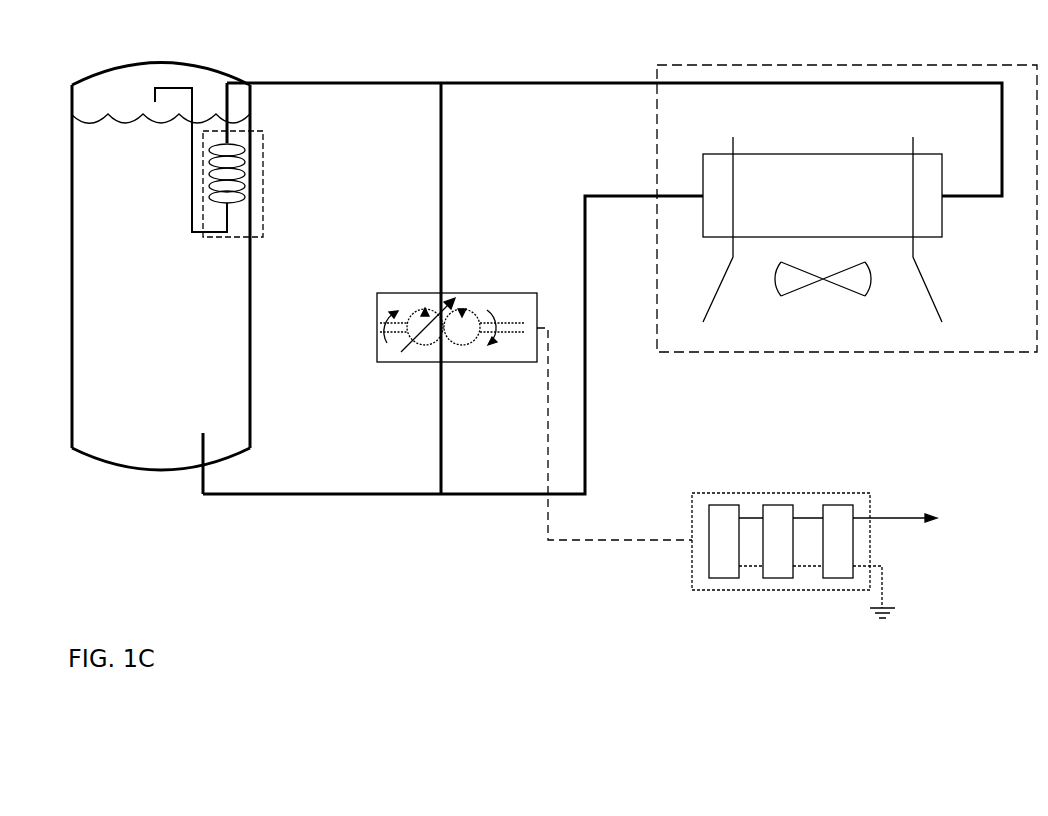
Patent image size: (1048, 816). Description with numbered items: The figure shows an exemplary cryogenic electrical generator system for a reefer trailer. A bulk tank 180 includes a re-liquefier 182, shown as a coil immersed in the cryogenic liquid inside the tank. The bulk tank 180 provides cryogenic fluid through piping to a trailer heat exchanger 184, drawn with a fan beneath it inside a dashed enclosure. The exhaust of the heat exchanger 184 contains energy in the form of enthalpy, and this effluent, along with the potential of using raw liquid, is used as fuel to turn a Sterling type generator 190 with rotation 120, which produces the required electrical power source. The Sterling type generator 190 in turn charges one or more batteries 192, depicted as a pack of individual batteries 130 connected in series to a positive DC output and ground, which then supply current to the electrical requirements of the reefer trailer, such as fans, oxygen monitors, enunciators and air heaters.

The bulk tank 180 is at (161, 279).
The re-liquefier 182 is at (265, 172).
The trailer heat exchanger 184 is at (847, 208).
The Sterling type generator 190 is at (435, 327).
The rotation 120 is at (477, 324).
The batteries 192 is at (839, 555).
The batteries 130 is at (781, 541).